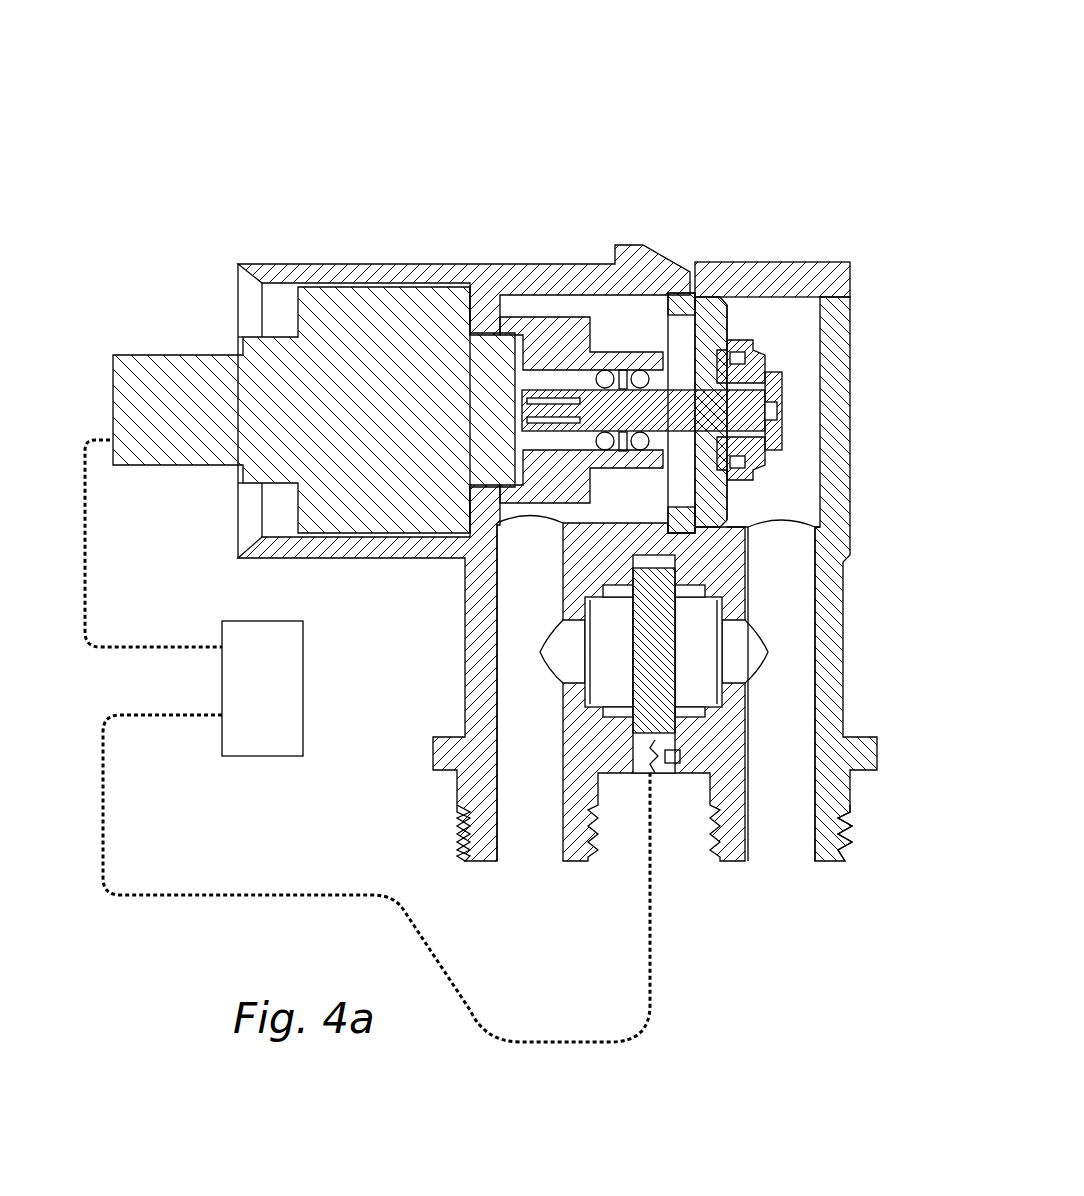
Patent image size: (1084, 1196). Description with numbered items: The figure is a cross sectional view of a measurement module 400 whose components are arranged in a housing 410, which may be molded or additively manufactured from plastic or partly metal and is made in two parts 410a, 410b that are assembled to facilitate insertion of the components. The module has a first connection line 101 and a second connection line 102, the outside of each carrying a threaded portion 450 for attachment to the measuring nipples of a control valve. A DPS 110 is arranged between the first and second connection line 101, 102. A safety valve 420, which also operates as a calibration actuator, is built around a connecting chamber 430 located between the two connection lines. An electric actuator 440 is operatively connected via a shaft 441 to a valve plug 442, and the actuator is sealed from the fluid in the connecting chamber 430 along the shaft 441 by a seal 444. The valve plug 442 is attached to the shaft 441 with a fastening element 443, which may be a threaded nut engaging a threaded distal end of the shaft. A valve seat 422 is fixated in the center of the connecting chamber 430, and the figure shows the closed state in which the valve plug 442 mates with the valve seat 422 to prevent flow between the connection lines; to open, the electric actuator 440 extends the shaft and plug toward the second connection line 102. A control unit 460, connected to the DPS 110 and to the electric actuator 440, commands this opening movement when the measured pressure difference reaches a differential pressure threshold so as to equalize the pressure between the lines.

The measurement module 400 is at (528, 501).
The housing 410 is at (565, 521).
The housing part 410a is at (662, 255).
The housing part 410b is at (793, 262).
The safety valve 420 is at (657, 332).
The valve seat 422 is at (727, 327).
The connecting chamber 430 is at (775, 487).
The electric actuator 440 is at (340, 320).
The shaft 441 is at (627, 403).
The valve plug 442 is at (758, 357).
The fastening element 443 is at (780, 383).
The seal 444 is at (612, 368).
The threaded portion 450 is at (425, 838).
The control unit 460 is at (205, 680).
The first connection line 101 is at (523, 862).
The second connection line 102 is at (790, 830).
The DPS 110 is at (667, 725).